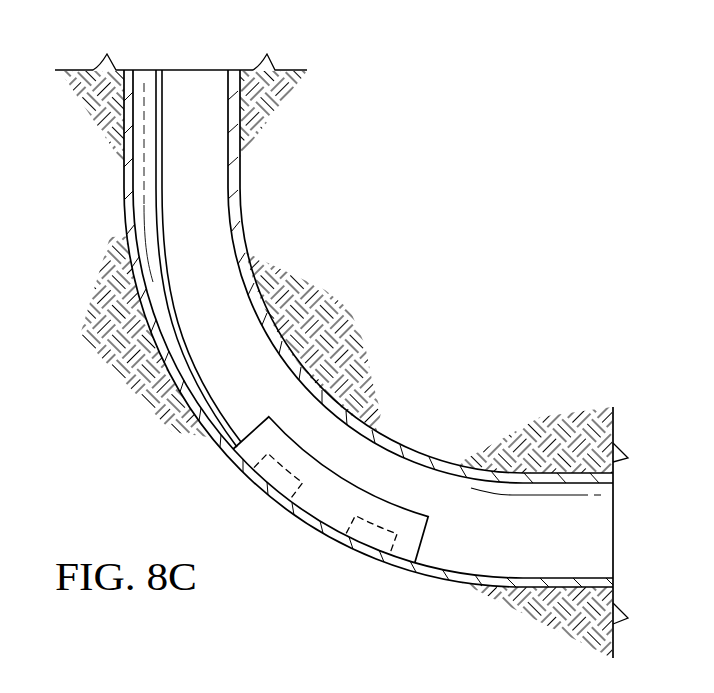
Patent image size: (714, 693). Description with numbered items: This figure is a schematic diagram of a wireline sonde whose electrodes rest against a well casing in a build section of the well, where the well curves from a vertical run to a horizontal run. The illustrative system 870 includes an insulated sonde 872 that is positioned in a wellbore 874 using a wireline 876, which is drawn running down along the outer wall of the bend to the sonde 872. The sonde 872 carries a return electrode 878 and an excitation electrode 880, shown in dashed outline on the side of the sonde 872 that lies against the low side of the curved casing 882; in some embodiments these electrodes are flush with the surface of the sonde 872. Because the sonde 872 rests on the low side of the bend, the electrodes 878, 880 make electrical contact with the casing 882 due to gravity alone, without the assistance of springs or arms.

The system 870 is at (402, 156).
The insulated sonde 872 is at (428, 543).
The wellbore 874 is at (150, 190).
The wireline 876 is at (157, 221).
The return electrode 878 is at (306, 498).
The excitation electrode 880 is at (402, 548).
The casing 882 is at (237, 193).